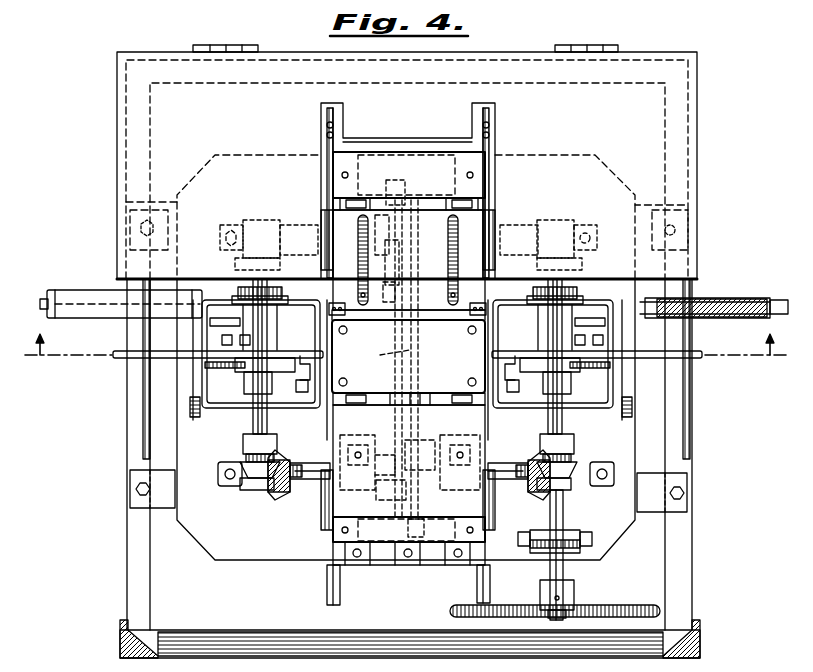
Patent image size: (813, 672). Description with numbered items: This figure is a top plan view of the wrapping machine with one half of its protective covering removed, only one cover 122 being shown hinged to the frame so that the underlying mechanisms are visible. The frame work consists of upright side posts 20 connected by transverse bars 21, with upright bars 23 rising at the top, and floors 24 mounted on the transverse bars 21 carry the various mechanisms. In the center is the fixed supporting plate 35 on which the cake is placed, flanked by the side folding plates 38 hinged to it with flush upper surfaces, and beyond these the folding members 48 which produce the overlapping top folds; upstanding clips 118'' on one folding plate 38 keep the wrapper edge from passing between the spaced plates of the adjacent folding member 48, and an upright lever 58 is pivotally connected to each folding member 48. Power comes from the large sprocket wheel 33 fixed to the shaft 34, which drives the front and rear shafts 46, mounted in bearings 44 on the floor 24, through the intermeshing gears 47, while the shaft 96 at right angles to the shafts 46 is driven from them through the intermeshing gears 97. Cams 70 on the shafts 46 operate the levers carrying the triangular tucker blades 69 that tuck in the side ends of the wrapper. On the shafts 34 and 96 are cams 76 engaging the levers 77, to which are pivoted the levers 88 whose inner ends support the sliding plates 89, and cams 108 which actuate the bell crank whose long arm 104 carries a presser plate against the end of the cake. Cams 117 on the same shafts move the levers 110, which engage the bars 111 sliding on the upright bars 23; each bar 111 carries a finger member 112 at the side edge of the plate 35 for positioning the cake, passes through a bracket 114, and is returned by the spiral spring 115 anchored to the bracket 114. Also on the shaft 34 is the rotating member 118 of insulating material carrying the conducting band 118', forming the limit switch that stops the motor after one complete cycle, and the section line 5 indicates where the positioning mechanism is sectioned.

The cover 122 is at (407, 162).
The tucker blade 69 is at (321, 129).
The folding member 48 is at (409, 348).
The side folding plate 38 is at (409, 381).
The supporting plate 35 is at (408, 351).
The sliding plate 89 is at (332, 371).
The upright lever 58 is at (383, 355).
The finger member 112 is at (345, 294).
The upstanding clips 118'' is at (408, 221).
The transverse bar 21 is at (127, 449).
The upright bar 23 is at (195, 417).
The floor 24 is at (246, 560).
The upright side post 20 is at (120, 641).
The bracket 114 is at (100, 290).
The bar 111 is at (44, 299).
The spiral spring 115 is at (730, 294).
The section line 5- 5 is at (405, 360).
The lever 77 is at (130, 361).
The lever 88 is at (291, 344).
The cam 117 is at (592, 300).
The cam 76 is at (590, 381).
The long arm of bell crank 104 is at (302, 380).
The cam 108 is at (250, 395).
The shaft 96 is at (268, 416).
The lever 110 is at (240, 293).
The bearing 44 is at (245, 490).
The intermeshing gears 97 is at (290, 221).
The shaft 46 is at (312, 480).
The cam 70 is at (322, 223).
The intermeshing gears 47 is at (548, 456).
The shaft 34 is at (563, 511).
The conducting band 118' is at (545, 527).
The rotating member 118 is at (536, 595).
The large sprocket wheel 33 is at (620, 595).